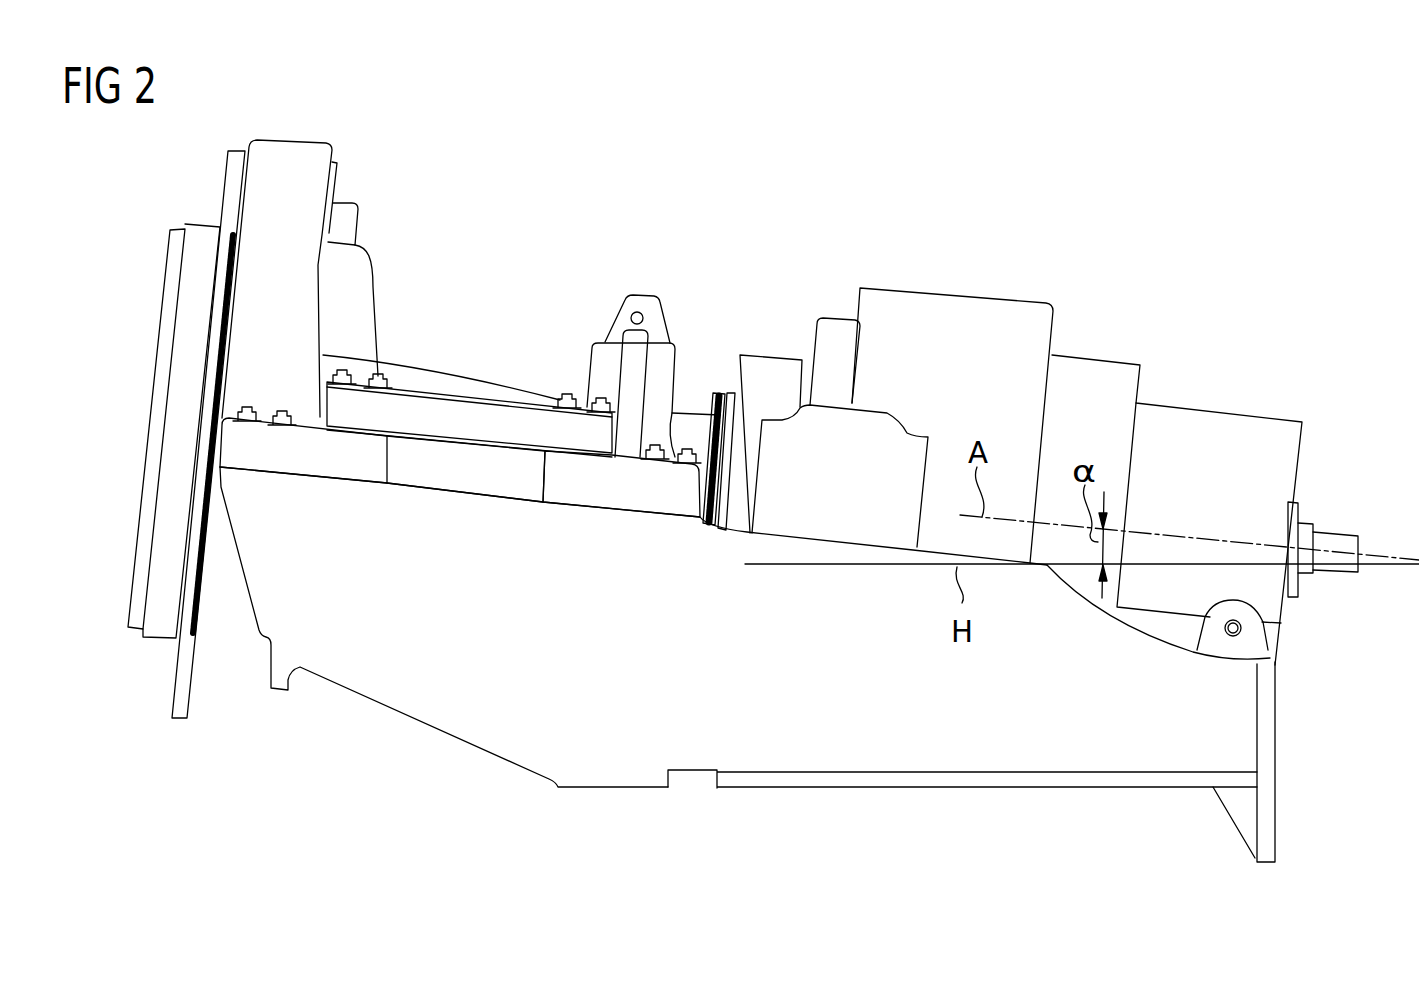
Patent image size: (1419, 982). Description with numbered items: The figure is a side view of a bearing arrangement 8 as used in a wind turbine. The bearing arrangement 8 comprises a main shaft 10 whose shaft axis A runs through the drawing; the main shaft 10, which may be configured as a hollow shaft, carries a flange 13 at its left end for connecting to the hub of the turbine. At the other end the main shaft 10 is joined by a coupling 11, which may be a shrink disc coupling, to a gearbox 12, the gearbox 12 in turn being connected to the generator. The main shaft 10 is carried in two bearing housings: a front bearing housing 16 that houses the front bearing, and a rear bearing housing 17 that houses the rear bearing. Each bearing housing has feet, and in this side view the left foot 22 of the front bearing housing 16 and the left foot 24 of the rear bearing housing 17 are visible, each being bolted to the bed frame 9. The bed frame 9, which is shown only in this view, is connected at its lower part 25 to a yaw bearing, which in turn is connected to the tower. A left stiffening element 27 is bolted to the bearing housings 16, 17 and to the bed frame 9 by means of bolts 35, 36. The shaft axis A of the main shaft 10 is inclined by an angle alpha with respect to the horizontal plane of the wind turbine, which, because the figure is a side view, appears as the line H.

The bearing arrangement 8 is at (1213, 200).
The bed frame 9 is at (367, 700).
The main shaft 10 is at (460, 373).
The coupling 11 is at (762, 373).
The gearbox 12 is at (973, 318).
The flange 13 is at (200, 237).
The front bearing housing 16 is at (352, 300).
The rear bearing housing 17 is at (668, 360).
The left foot 22 is at (357, 470).
The left foot 24 is at (632, 497).
The lower part 25 is at (908, 788).
The left stiffening element 27 is at (497, 413).
The bolt 35 is at (378, 372).
The bolt 36 is at (563, 390).